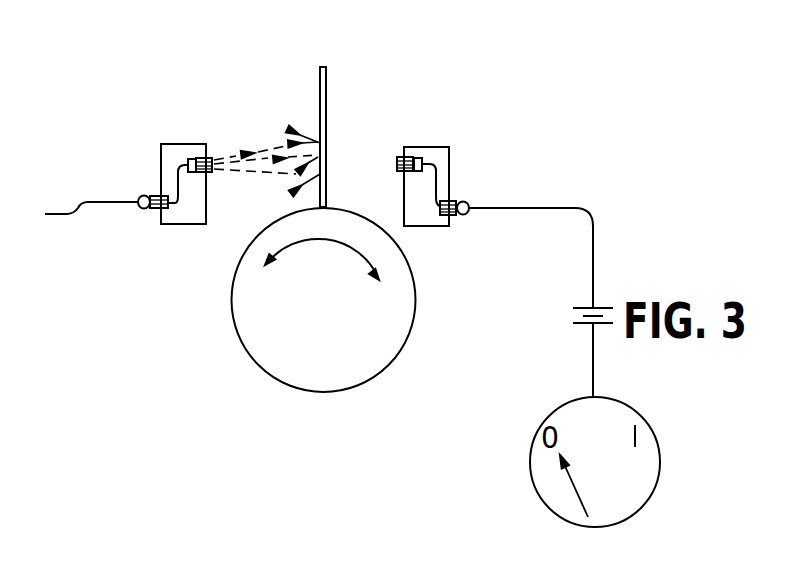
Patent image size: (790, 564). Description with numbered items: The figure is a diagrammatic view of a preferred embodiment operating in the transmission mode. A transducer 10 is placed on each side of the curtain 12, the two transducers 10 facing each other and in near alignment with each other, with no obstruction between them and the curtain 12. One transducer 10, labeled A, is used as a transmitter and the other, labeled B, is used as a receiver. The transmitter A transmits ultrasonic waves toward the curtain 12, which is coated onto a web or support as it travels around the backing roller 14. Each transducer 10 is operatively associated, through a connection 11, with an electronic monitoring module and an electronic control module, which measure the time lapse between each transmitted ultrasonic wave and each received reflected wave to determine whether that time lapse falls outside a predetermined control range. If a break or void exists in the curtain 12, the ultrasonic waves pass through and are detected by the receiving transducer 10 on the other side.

The transducer 10 is at (183, 143).
The connection 11 is at (104, 204).
The curtain 12 is at (320, 75).
The backing roller 14 is at (333, 304).